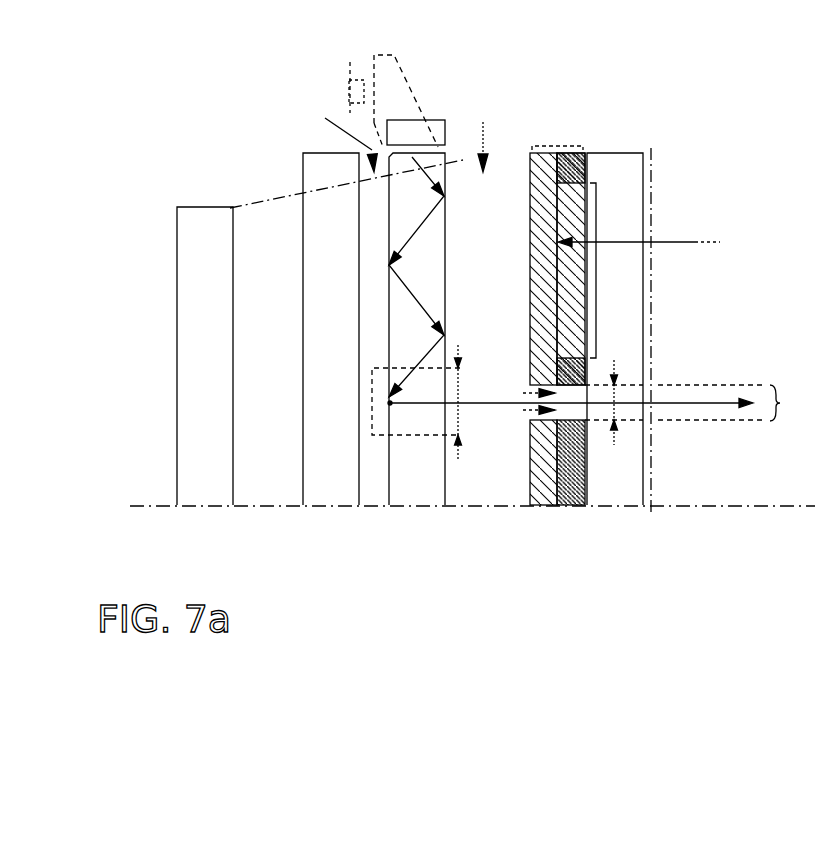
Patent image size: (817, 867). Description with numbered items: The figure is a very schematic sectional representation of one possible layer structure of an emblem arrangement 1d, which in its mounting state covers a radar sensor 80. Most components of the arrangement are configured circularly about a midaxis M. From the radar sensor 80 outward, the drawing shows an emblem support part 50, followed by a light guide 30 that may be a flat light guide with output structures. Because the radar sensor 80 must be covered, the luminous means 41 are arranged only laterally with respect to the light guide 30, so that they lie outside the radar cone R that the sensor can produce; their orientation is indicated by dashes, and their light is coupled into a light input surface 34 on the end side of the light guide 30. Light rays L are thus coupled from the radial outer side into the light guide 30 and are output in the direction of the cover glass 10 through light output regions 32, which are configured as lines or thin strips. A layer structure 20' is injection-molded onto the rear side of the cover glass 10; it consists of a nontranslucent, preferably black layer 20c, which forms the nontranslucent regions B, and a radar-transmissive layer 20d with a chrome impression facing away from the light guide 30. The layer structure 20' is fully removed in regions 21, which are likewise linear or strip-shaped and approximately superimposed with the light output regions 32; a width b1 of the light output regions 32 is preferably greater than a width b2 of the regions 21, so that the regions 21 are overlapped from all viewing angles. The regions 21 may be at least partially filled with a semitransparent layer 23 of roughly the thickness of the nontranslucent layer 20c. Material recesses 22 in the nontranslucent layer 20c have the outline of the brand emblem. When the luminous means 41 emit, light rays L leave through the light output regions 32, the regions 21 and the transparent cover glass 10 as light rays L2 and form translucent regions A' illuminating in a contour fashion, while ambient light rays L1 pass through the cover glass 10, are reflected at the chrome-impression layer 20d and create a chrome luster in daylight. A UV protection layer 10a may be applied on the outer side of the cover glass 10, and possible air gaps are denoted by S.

The radar sensor 80 is at (202, 498).
The emblem support part 50 is at (327, 498).
The light guide 30 is at (433, 498).
The light output regions 32 is at (377, 437).
The light input surface 34 is at (373, 68).
The luminous means 41 is at (355, 91).
The semitransparent layer 23 is at (523, 393).
The regions 21 is at (523, 410).
The radar-transmissive layer 20d is at (537, 497).
The nontranslucent layer 20c is at (571, 497).
The layer structure 20' is at (557, 116).
The material recesses 22 is at (597, 215).
The cover glass 10 is at (636, 497).
The UV protection layer 10a is at (651, 452).
The emblem arrangement 1d is at (663, 136).
The air gaps S is at (397, 134).
The radar cone R is at (268, 199).
The light rays L is at (428, 218).
The nontranslucent regions B is at (592, 150).
The ambient light rays L1 is at (695, 244).
The outgoing light rays L2 is at (695, 401).
The width of the light output regions b1 is at (458, 391).
The width of the regions b2 is at (614, 395).
The translucent regions A' is at (597, 403).
The midaxis M is at (723, 506).